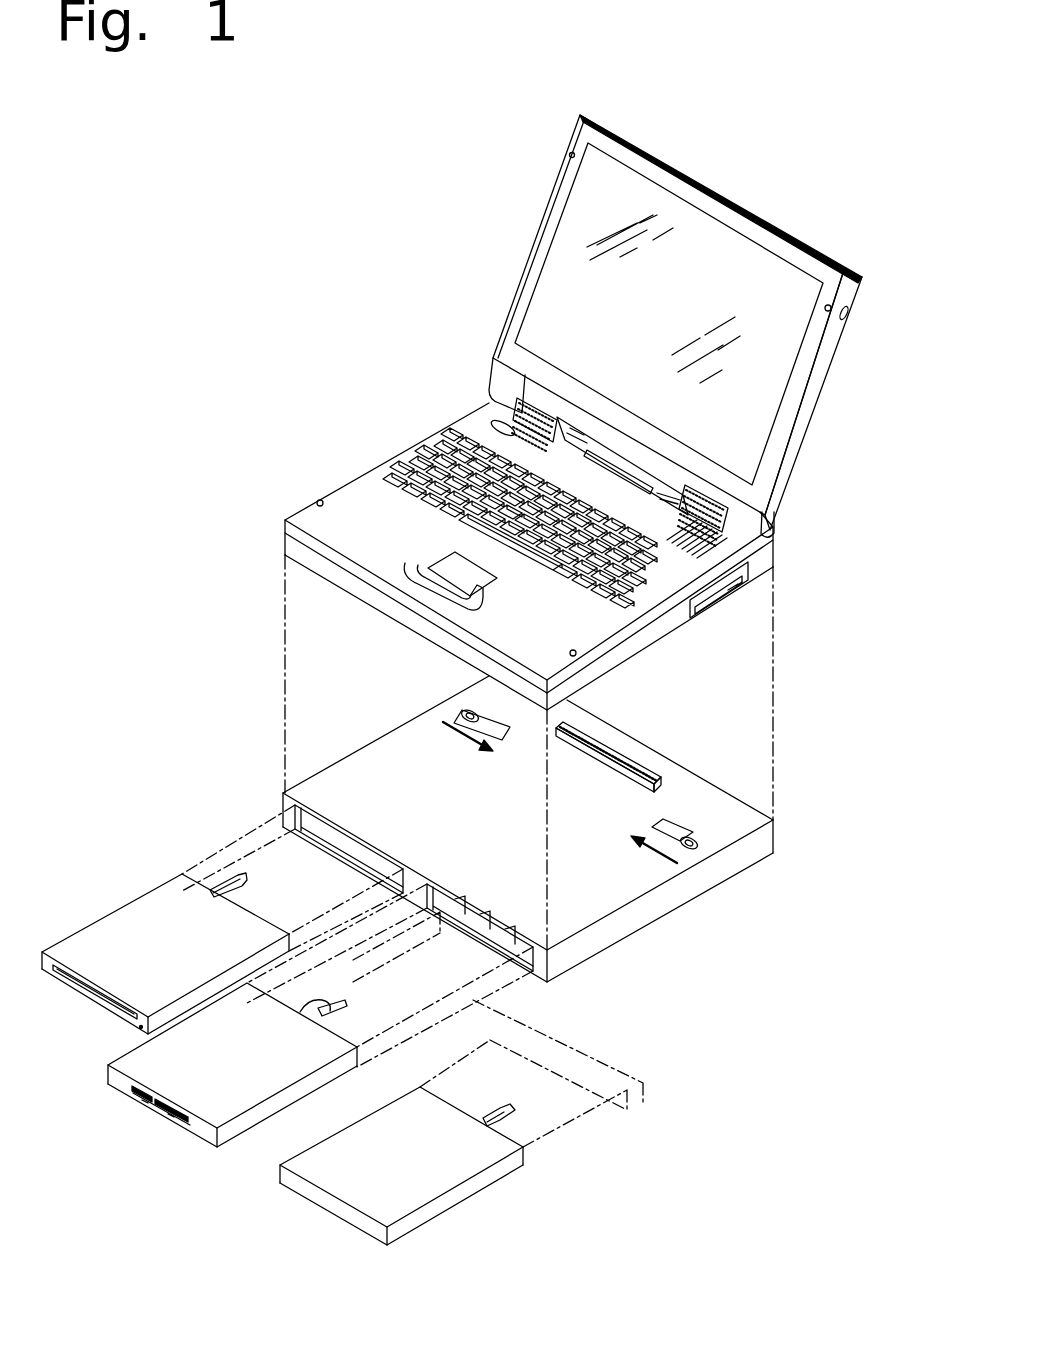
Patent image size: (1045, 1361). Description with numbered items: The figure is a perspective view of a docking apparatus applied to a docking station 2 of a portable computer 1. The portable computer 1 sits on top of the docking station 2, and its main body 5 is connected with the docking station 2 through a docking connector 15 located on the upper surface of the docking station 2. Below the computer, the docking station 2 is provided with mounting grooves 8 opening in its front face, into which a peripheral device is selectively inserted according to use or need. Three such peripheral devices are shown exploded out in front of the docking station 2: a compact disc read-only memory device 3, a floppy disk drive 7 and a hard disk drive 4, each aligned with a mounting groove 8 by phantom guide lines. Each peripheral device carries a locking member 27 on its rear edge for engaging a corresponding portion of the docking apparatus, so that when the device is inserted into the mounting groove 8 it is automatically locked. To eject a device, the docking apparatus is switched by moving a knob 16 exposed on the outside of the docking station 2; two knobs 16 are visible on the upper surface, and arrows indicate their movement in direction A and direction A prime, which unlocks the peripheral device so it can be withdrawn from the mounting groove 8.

The portable computer 1 is at (518, 412).
The docking station 2 is at (471, 826).
The compact disc read-only memory device 3 is at (127, 923).
The hard disk drive 4 is at (433, 1177).
The main body 5 is at (390, 452).
The floppy disk drive 7 is at (240, 1092).
The mounting groove 8 is at (283, 817).
The docking connector 15 is at (613, 752).
The knob 16 is at (462, 710).
The locking member 27 is at (243, 876).